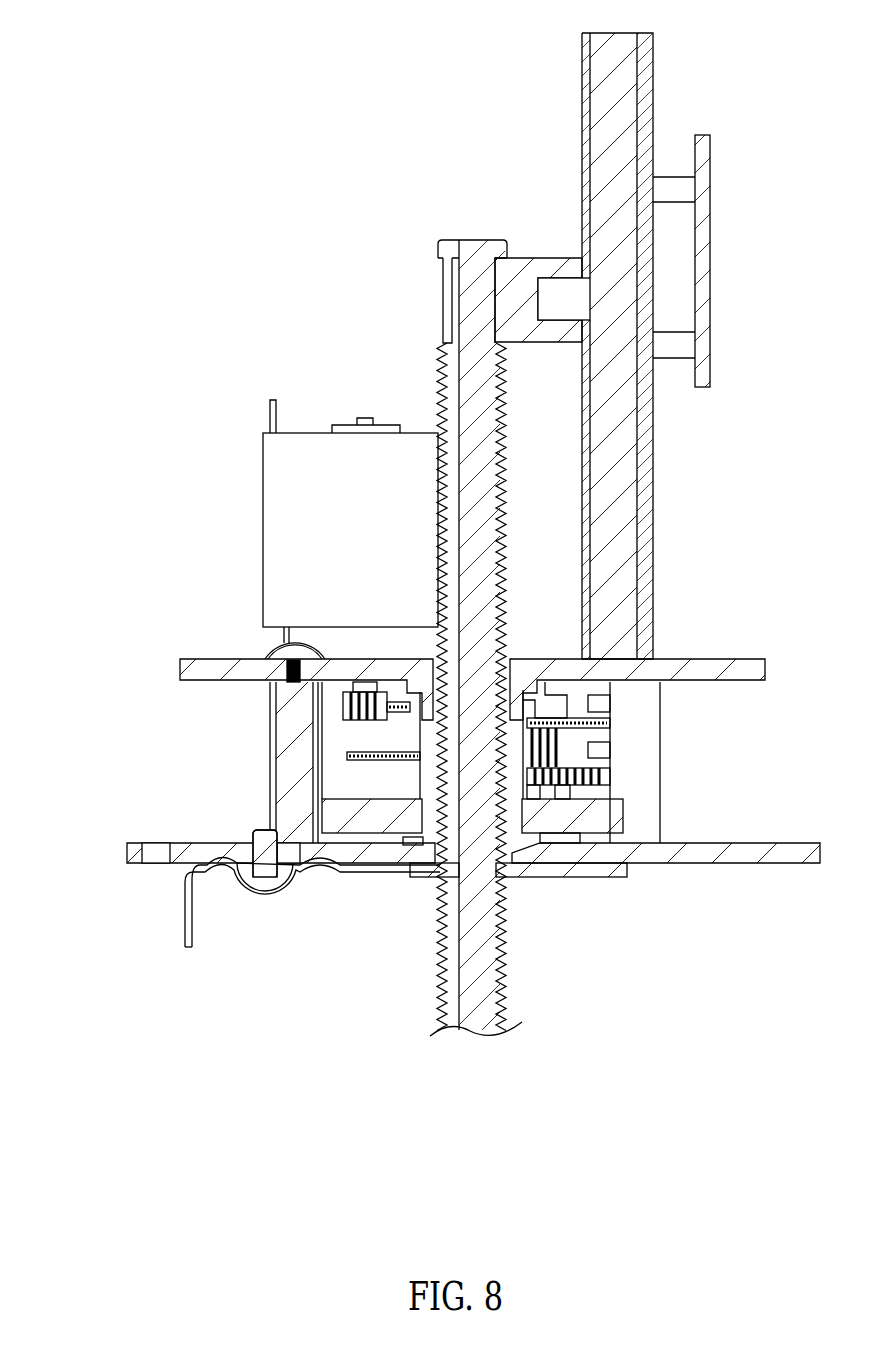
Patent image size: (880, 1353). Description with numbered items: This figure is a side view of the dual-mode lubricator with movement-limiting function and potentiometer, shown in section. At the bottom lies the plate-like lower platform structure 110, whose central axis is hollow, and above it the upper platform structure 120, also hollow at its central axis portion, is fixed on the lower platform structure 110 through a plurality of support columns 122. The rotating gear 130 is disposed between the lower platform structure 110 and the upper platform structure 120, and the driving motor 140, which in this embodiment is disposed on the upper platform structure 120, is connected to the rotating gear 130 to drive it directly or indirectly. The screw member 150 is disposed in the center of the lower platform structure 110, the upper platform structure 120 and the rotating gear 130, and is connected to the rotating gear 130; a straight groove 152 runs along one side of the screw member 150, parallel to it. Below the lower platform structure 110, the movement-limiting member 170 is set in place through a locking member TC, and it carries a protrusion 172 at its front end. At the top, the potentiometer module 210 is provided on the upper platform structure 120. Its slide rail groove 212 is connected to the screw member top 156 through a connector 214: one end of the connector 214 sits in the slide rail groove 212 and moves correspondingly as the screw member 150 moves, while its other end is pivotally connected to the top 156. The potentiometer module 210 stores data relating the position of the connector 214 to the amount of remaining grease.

The lower platform structure 110 is at (205, 848).
The upper platform structure 120 is at (205, 675).
The support columns 122 is at (282, 763).
The rotating gear 130 is at (612, 768).
The driving motor 140 is at (287, 514).
The screw member 150 is at (480, 940).
The straight groove 152 is at (448, 368).
The screw member top 156 is at (477, 240).
The movement-limiting member 170 is at (185, 920).
The protrusion 172 is at (445, 878).
The potentiometer module 210 is at (643, 82).
The slide rail groove 212 is at (582, 70).
The connector 214 is at (545, 267).
The locking member TC is at (263, 884).